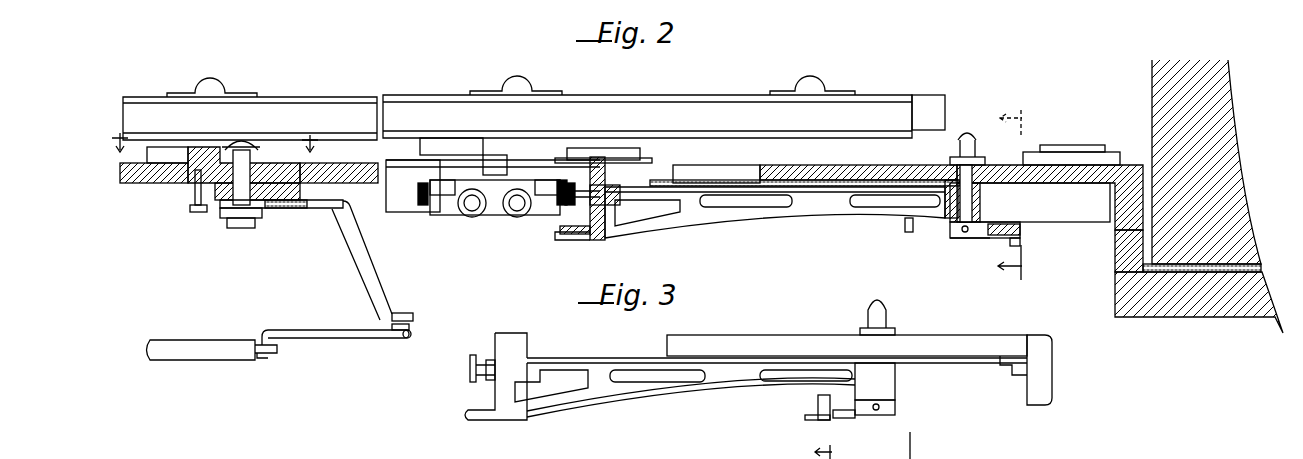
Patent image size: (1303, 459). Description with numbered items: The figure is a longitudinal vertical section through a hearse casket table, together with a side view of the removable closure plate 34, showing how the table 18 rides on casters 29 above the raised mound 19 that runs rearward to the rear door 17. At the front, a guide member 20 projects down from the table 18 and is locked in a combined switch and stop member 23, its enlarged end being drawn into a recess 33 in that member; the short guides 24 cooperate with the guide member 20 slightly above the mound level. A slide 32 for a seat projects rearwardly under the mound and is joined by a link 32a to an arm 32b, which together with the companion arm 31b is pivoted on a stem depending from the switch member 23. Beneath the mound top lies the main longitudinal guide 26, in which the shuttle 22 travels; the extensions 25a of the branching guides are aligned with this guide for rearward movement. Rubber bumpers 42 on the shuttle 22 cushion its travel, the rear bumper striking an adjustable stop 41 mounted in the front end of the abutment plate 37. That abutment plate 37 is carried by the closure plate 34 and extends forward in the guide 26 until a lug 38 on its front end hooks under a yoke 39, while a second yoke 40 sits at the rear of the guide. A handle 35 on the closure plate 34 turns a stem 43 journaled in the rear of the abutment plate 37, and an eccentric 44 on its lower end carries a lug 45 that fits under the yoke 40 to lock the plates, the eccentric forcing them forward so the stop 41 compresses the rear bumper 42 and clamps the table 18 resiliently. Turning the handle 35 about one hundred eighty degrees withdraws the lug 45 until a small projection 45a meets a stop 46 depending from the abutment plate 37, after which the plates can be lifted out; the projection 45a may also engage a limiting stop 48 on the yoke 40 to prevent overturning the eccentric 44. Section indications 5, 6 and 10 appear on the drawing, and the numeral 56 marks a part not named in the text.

In FIG. 2, the section line 5- 5 is at (214, 141).
In FIG. 3, the section line 6- 6 is at (862, 445).
In FIG. 2, the section line 10- 10 is at (1022, 193).
In FIG. 2, the rear door 17 is at (1230, 125).
In FIG. 2, the table 18 is at (232, 108).
In FIG. 2, the mound 19 is at (150, 180).
In FIG. 2, the front guide member 20 is at (262, 147).
In FIG. 2, the shuttle 22 is at (497, 162).
In FIG. 2, the switch and stop member 23 is at (216, 152).
In FIG. 2, the short guides 24 is at (163, 156).
In FIG. 2, the extensions of the guides 25a is at (678, 180).
In FIG. 2, the main longitudinal guide 26 is at (405, 216).
In FIG. 2, the casters 29 is at (612, 147).
In FIG. 2, the arm 31b is at (290, 210).
In FIG. 2, the slide 32 is at (218, 360).
In FIG. 2, the link 32a is at (337, 344).
In FIG. 2, the arm 32b is at (362, 265).
In FIG. 2, the recess 33 is at (238, 146).
In FIG. 2, the closure plate 34 is at (870, 170).
In FIG. 3, the closure plate 34 is at (762, 345).
In FIG. 2, the handle 35 is at (978, 138).
In FIG. 3, the handle 35 is at (888, 308).
In FIG. 2, the abutment plate 37 is at (812, 205).
In FIG. 3, the abutment plate 37 is at (735, 380).
In FIG. 2, the lug 38 is at (580, 243).
In FIG. 3, the lug 38 is at (483, 420).
In FIG. 2, the yoke 39 is at (562, 232).
In FIG. 2, the yoke 40 is at (1022, 230).
In FIG. 2, the adjustable stop 41 is at (578, 208).
In FIG. 3, the adjustable stop 41 is at (473, 352).
In FIG. 2, the rubber bumpers 42 is at (423, 208).
In FIG. 2, the stem 43 is at (968, 202).
In FIG. 2, the eccentric 44 is at (952, 236).
In FIG. 3, the eccentric 44 is at (896, 406).
In FIG. 2, the lug 45 is at (985, 242).
In FIG. 3, the lug 45 is at (850, 418).
In FIG. 3, the projection 45a is at (810, 420).
In FIG. 2, the stop 46 is at (905, 228).
In FIG. 3, the stop 46 is at (818, 406).
In FIG. 2, the limiting stop 48 is at (1020, 246).
In FIG. 2, the guide plate 56 is at (470, 143).